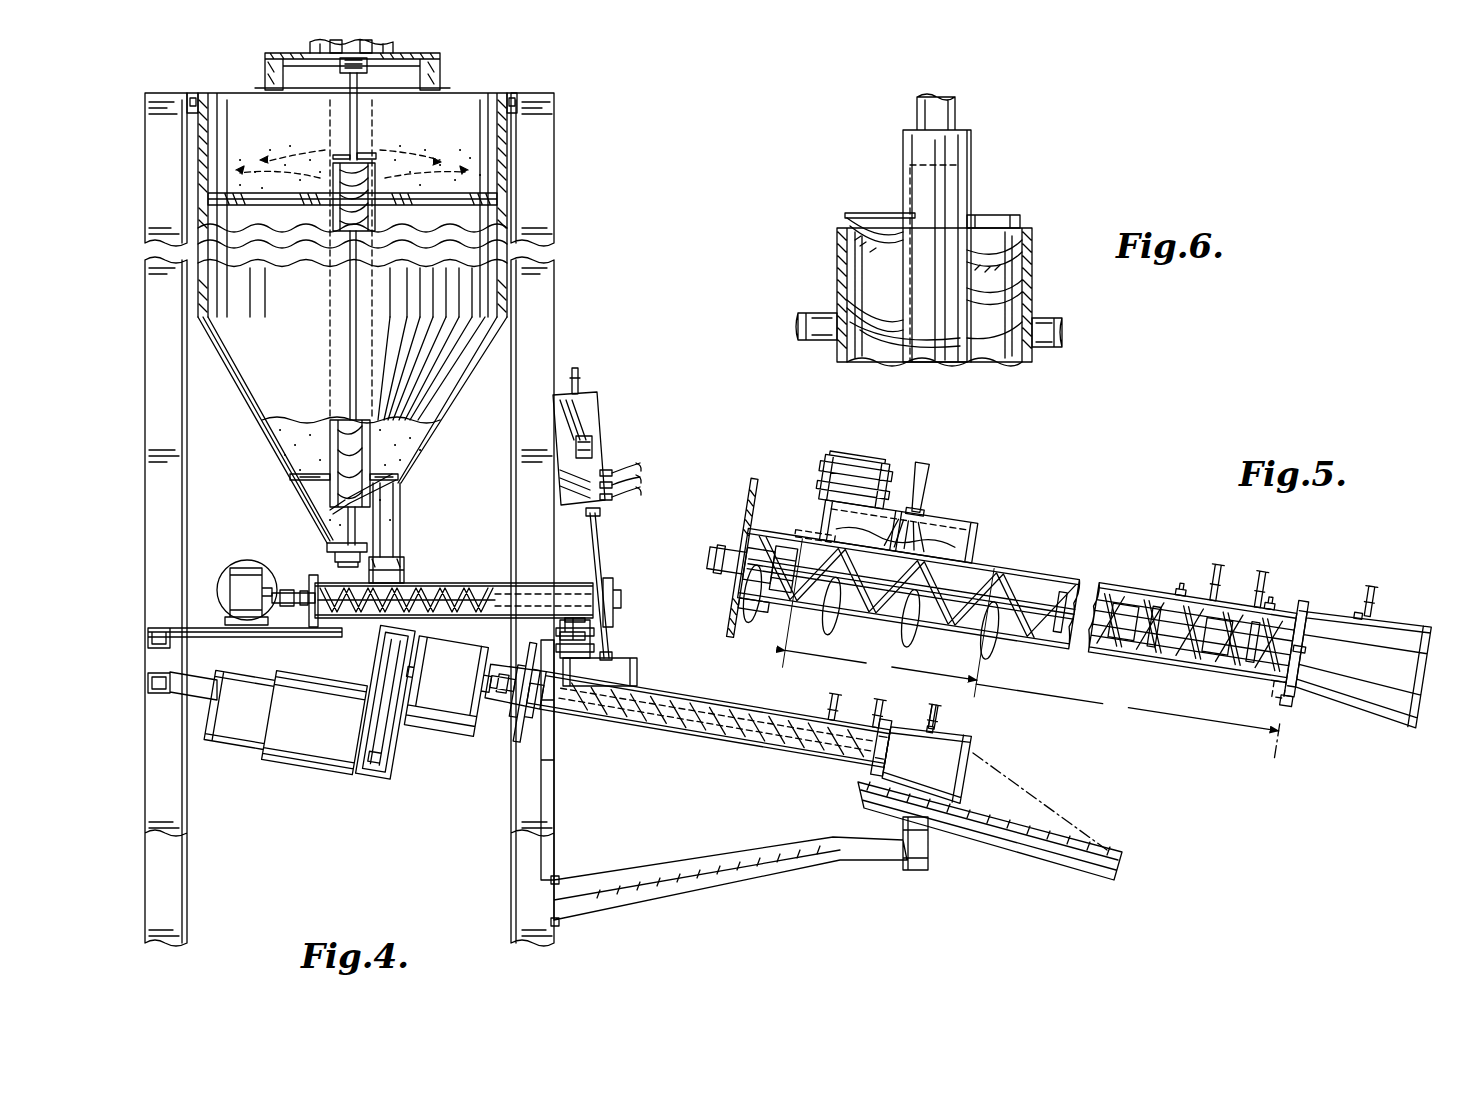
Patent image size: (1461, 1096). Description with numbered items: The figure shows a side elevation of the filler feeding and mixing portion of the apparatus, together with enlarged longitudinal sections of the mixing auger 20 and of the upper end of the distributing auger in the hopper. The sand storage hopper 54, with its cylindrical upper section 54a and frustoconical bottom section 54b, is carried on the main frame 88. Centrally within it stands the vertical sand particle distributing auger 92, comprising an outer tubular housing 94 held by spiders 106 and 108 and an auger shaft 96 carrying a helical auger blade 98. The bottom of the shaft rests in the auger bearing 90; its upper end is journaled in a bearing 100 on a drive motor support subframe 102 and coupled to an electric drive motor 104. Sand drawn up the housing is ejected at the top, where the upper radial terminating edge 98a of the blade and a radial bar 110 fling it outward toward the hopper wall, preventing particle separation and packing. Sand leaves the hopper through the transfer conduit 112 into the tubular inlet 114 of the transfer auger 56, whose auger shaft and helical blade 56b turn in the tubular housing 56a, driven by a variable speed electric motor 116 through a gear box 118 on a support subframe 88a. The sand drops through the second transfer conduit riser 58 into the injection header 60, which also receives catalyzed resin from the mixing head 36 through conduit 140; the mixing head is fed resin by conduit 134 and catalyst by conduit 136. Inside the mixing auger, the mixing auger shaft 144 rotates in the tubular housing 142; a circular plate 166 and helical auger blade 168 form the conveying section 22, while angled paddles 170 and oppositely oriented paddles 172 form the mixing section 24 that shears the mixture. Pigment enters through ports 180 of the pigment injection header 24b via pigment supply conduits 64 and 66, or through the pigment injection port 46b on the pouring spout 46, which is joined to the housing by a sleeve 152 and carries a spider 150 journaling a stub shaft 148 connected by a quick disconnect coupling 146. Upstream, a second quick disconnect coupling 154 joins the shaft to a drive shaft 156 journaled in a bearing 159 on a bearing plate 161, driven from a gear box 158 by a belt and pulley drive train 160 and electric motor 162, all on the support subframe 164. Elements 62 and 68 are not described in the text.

In FIG. 4, the mixing auger 20 is at (712, 730).
In FIG. 5, the mixing auger 20 is at (1060, 589).
In FIG. 5, the conveying section 22 is at (904, 619).
In FIG. 5, the mixing section 24 is at (1134, 663).
In FIG. 4, the pigment injection header 24b is at (880, 731).
In FIG. 5, the pigment injection header 24b is at (1242, 586).
In FIG. 4, the mixing head 36 is at (589, 400).
In FIG. 4, the pouring spout 46 is at (964, 753).
In FIG. 5, the pouring spout 46 is at (1366, 674).
In FIG. 4, the pigment injection port 46b is at (920, 706).
In FIG. 5, the pigment injection port 46b is at (1387, 606).
In FIG. 4, the sand storage hopper 54 is at (411, 318).
In FIG. 4, the hopper upper section 54a is at (505, 176).
In FIG. 4, the bottom section of the hopper 54b is at (454, 347).
In FIG. 4, the transfer auger 56 is at (465, 576).
In FIG. 4, the tubular housing 56a is at (468, 582).
In FIG. 4, the auger shaft and helical blade 56b is at (382, 620).
In FIG. 4, the second transfer conduit riser 58 is at (583, 640).
In FIG. 5, the second transfer conduit riser 58 is at (836, 469).
In FIG. 4, the injection header 60 is at (636, 666).
In FIG. 5, the injection header 60 is at (973, 516).
In FIG. 4, the discharge chute 62 is at (1108, 860).
In FIG. 4, the pigment supply conduit 64 is at (836, 720).
In FIG. 5, the pigment supply conduit 64 is at (1224, 554).
In FIG. 4, the pigment supply conduit 66 is at (876, 717).
In FIG. 5, the pigment supply conduit 66 is at (1270, 574).
In FIG. 4, the fitting 68 is at (932, 719).
In FIG. 5, the fitting 68 is at (1383, 598).
In FIG. 4, the main frame 88 is at (556, 278).
In FIG. 4, the support subframe 88a is at (203, 631).
In FIG. 4, the auger bearing 90 is at (337, 544).
In FIG. 4, the sand particle distributing auger 92 is at (358, 313).
In FIG. 6, the sand particle distributing auger 92 is at (914, 230).
In FIG. 4, the outer tubular housing 94 is at (376, 451).
In FIG. 6, the outer tubular housing 94 is at (1028, 246).
In FIG. 4, the auger shaft 96 is at (357, 122).
In FIG. 6, the auger shaft 96 is at (951, 150).
In FIG. 4, the helical auger blade 98 is at (356, 164).
In FIG. 6, the helical auger blade 98 is at (880, 250).
In FIG. 4, the upper radial terminating edge 98a is at (340, 158).
In FIG. 6, the upper radial terminating edge 98a is at (871, 215).
In FIG. 4, the bearing 100 is at (356, 68).
In FIG. 4, the drive motor support subframe 102 is at (275, 64).
In FIG. 4, the electric drive motor 104 is at (406, 44).
In FIG. 4, the spider 106 is at (439, 206).
In FIG. 6, the spider 106 is at (1061, 325).
In FIG. 4, the spider 108 is at (318, 474).
In FIG. 4, the bar 110 is at (367, 158).
In FIG. 6, the bar 110 is at (1001, 220).
In FIG. 4, the transfer conduit 112 is at (397, 516).
In FIG. 4, the tubular inlet 114 is at (404, 560).
In FIG. 4, the electric motor 116 is at (252, 574).
In FIG. 4, the gear box 118 is at (235, 590).
In FIG. 4, the conduit 134 is at (609, 474).
In FIG. 4, the conduit 136 is at (612, 496).
In FIG. 4, the conduit 140 is at (598, 552).
In FIG. 5, the conduit 140 is at (916, 467).
In FIG. 5, the tubular housing 142 is at (1115, 588).
In FIG. 5, the mixing auger shaft 144 is at (1132, 624).
In FIG. 5, the quick disconnect coupling 146 is at (1299, 674).
In FIG. 5, the stub shaft 148 is at (1308, 619).
In FIG. 5, the spider 150 is at (1308, 667).
In FIG. 5, the sleeve 152 is at (1312, 681).
In FIG. 5, the second quick disconnect coupling 154 is at (780, 580).
In FIG. 4, the drive shaft 156 is at (512, 723).
In FIG. 5, the drive shaft 156 is at (730, 550).
In FIG. 4, the gear box 158 is at (452, 702).
In FIG. 4, the bearing 159 is at (506, 676).
In FIG. 5, the bearing 159 is at (742, 568).
In FIG. 4, the belt and pulley drive train 160 is at (392, 775).
In FIG. 4, the bearing plate 161 is at (556, 742).
In FIG. 5, the bearing plate 161 is at (744, 586).
In FIG. 4, the electric motor 162 is at (296, 739).
In FIG. 4, the support subframe 164 is at (173, 689).
In FIG. 5, the circular plate 166 is at (798, 552).
In FIG. 5, the helical auger blade 168 is at (886, 516).
In FIG. 5, the paddles 170 is at (1062, 598).
In FIG. 5, the paddles 172 is at (1166, 597).
In FIG. 5, the ports 180 is at (1194, 592).